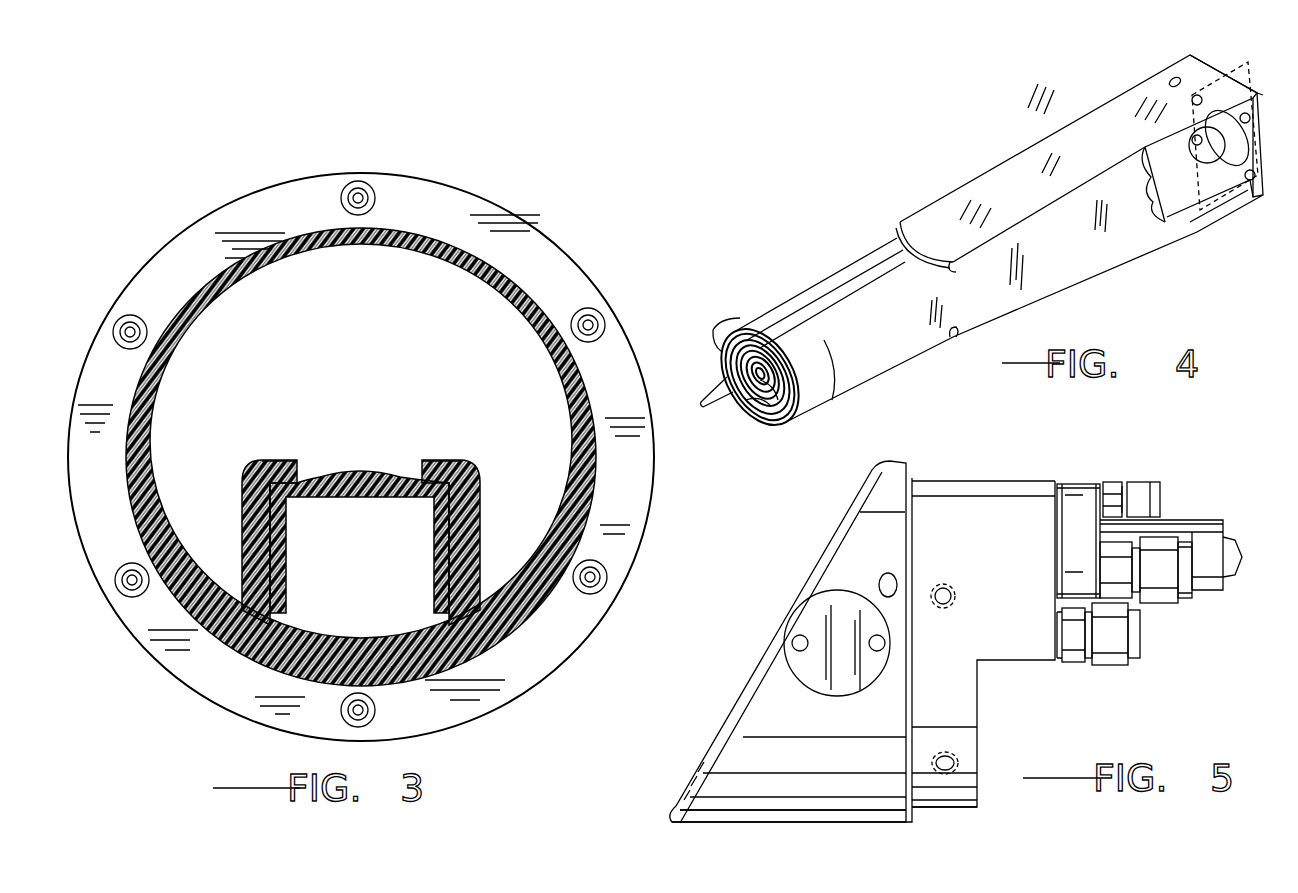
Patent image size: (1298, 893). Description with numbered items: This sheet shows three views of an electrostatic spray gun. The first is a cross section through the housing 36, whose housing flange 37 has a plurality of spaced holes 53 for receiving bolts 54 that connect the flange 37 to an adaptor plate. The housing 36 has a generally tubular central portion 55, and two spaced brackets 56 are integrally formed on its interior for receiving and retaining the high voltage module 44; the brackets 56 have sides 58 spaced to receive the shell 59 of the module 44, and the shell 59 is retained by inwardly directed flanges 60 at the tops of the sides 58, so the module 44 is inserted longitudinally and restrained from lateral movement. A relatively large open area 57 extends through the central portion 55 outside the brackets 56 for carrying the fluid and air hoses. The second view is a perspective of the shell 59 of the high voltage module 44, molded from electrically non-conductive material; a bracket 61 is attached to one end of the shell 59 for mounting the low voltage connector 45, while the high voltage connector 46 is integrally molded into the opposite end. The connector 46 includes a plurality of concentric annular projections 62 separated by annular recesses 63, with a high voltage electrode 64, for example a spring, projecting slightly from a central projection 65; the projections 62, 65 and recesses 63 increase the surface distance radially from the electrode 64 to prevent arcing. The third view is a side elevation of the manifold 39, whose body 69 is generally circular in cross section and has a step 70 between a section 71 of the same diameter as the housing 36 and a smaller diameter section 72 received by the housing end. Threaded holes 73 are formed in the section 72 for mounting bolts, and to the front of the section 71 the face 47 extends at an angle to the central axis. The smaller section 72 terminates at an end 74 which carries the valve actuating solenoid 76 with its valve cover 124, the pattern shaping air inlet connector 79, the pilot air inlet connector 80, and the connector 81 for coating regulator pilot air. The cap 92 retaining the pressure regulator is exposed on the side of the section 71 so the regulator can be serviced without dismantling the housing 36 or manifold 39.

In FIG. 3, the housing 36 is at (492, 715).
In FIG. 3, the housing flange 37 is at (570, 655).
In FIG. 5, the manifold 39 is at (712, 828).
In FIG. 4, the high voltage module 44 is at (903, 218).
In FIG. 4, the low voltage connector 45 is at (1258, 100).
In FIG. 4, the high voltage connector 46 is at (785, 450).
In FIG. 5, the face 47 is at (733, 692).
In FIG. 3, the holes 53 is at (360, 197).
In FIG. 3, the bolts 54 is at (372, 196).
In FIG. 3, the central portion 55 is at (595, 500).
In FIG. 3, the brackets 56 is at (252, 470).
In FIG. 3, the open area 57 is at (487, 298).
In FIG. 3, the sides 58 is at (240, 545).
In FIG. 3, the shell 59 is at (355, 470).
In FIG. 4, the shell 59 is at (1045, 262).
In FIG. 3, the inwardly directed flanges 60 is at (268, 460).
In FIG. 4, the bracket 61 is at (1228, 215).
In FIG. 4, the annular projections 62 is at (727, 380).
In FIG. 4, the annular recesses 63 is at (713, 330).
In FIG. 4, the high voltage electrode 64 is at (758, 414).
In FIG. 4, the central projection 65 is at (770, 415).
In FIG. 5, the body 69 is at (948, 688).
In FIG. 5, the step 70 is at (913, 825).
In FIG. 5, the section 71 is at (775, 826).
In FIG. 5, the section 72 is at (966, 812).
In FIG. 5, the threaded holes 73 is at (950, 604).
In FIG. 5, the end 74 is at (1062, 660).
In FIG. 5, the valve actuating solenoid 76 is at (1245, 570).
In FIG. 5, the pattern shaping air inlet connector 79 is at (1185, 603).
In FIG. 5, the pilot air inlet connector 80 is at (1158, 500).
In FIG. 5, the connector for coating regulator pilot air 81 is at (1138, 640).
In FIG. 5, the cap 92 is at (845, 697).
In FIG. 5, the valve cover 124 is at (1070, 483).